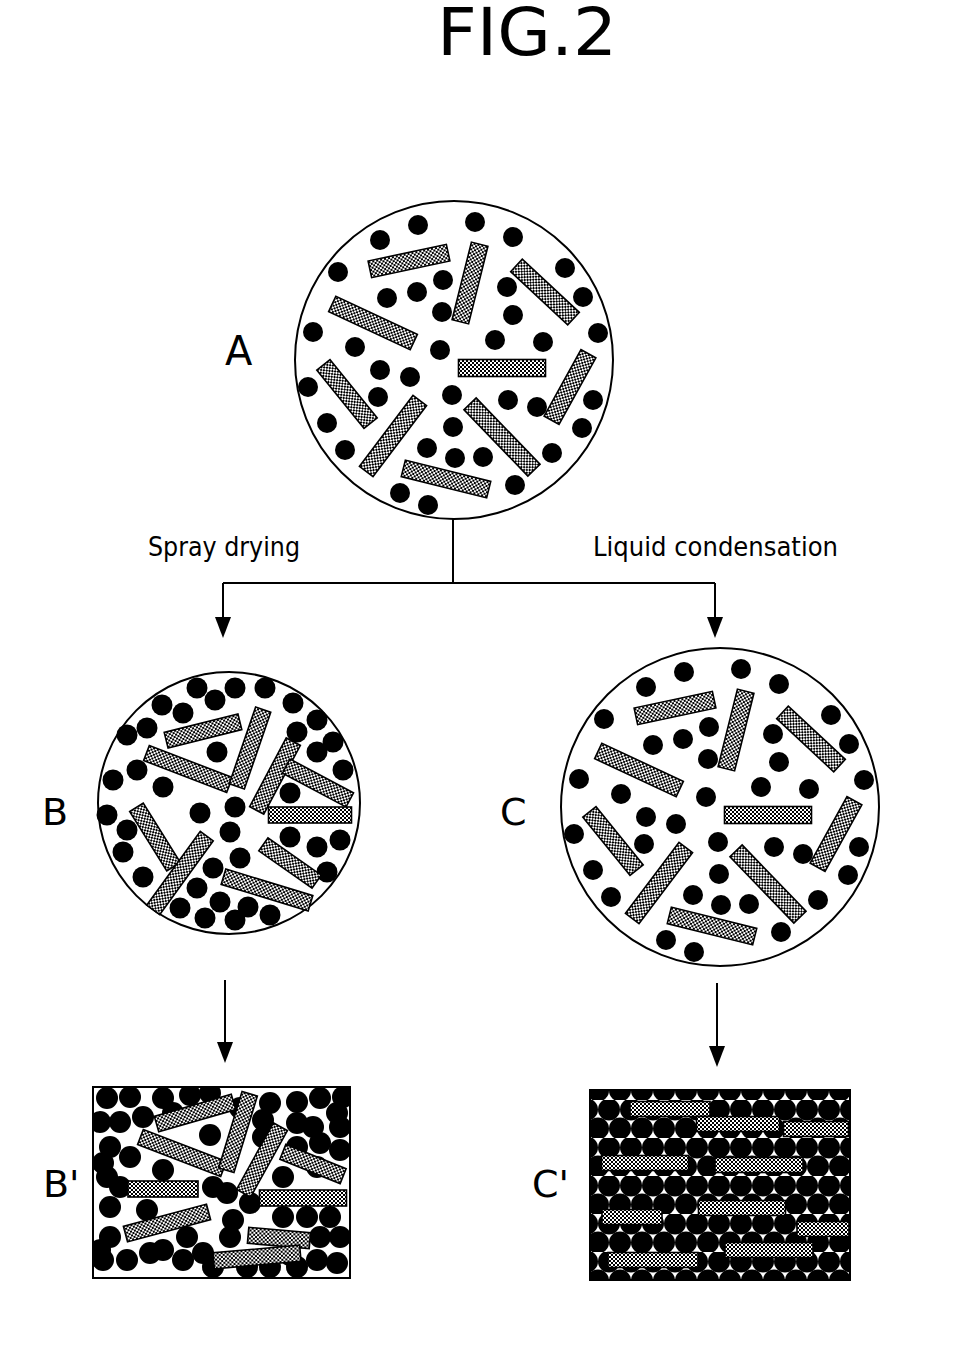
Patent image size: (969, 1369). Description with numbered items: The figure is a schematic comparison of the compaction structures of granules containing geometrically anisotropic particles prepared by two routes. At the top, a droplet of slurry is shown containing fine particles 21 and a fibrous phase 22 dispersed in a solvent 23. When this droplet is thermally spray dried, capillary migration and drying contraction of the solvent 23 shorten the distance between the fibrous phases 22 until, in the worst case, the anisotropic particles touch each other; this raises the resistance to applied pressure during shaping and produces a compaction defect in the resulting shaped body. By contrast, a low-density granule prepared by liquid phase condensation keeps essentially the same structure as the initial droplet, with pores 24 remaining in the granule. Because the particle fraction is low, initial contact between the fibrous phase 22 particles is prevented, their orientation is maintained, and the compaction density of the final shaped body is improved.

The fine particle 21 is at (582, 263).
The fibrous phase 22 is at (600, 374).
The solvent 23 is at (350, 250).
The pores 24 is at (820, 943).